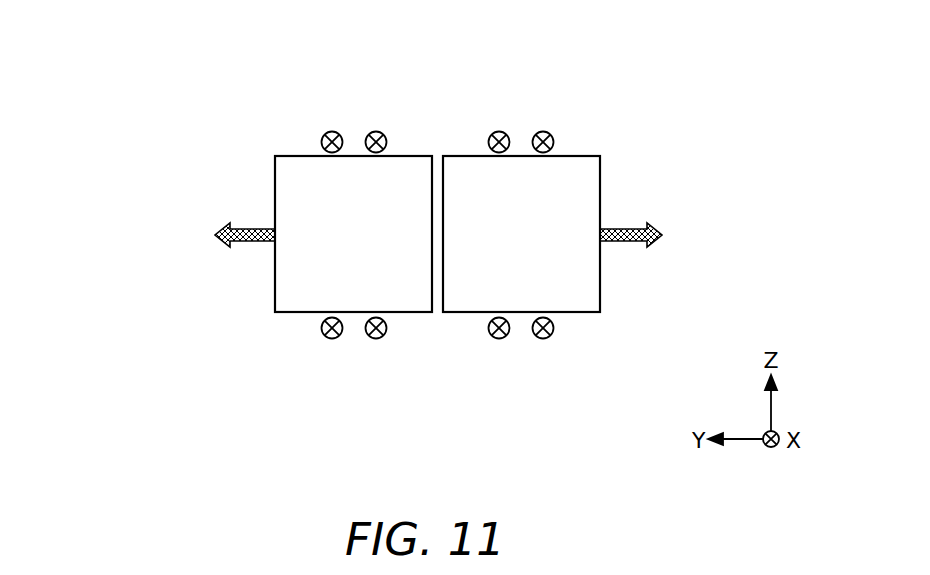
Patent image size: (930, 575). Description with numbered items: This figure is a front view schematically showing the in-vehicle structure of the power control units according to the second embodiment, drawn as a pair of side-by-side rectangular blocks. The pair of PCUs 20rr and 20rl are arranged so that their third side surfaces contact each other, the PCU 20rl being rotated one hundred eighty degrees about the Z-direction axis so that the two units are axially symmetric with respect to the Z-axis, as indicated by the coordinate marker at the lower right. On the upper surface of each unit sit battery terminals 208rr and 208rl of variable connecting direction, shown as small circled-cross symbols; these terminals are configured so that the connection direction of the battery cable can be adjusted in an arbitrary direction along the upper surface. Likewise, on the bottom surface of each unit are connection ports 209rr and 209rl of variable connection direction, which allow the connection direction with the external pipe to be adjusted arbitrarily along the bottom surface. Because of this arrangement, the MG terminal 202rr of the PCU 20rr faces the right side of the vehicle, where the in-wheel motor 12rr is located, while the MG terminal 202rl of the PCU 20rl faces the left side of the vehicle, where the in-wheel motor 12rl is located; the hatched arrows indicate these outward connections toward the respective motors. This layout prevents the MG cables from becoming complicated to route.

The PCU 20rl is at (250, 164).
The PCU 20rr is at (622, 160).
The battery terminal 208rl is at (332, 131).
The battery terminal 208rr is at (499, 131).
The connection port 209rl is at (332, 339).
The connection port 209rr is at (499, 339).
The MG terminal 202rl is at (275, 247).
The MG terminal 202rr is at (600, 247).
The in-wheel motor 12rl is at (128, 237).
The in-wheel motor 12rr is at (743, 240).